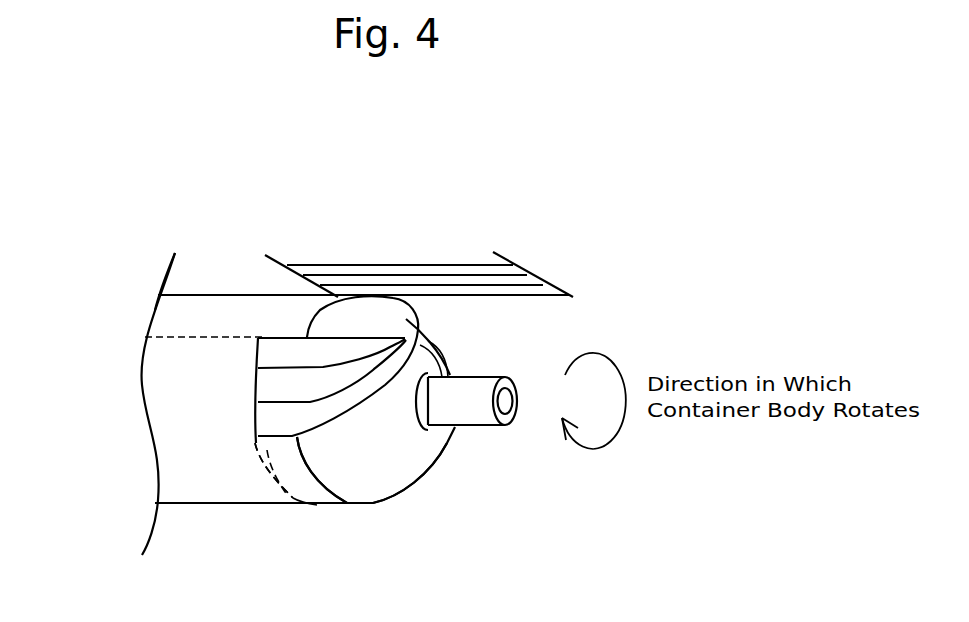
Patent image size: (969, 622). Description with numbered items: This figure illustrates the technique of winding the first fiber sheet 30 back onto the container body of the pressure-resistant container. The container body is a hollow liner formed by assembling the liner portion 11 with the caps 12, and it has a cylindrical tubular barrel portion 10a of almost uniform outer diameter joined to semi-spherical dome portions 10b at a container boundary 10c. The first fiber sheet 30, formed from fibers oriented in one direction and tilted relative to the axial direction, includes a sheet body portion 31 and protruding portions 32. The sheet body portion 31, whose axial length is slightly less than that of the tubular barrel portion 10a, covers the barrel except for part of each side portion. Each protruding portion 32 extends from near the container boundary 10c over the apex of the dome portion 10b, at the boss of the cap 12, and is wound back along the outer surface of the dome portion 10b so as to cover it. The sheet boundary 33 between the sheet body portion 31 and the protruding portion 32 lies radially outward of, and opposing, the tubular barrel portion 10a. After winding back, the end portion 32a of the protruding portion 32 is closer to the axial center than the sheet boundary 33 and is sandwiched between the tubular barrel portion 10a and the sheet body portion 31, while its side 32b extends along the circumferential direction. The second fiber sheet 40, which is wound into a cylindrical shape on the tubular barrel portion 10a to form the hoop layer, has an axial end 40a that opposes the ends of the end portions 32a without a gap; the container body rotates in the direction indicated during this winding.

The liner portion 11 is at (360, 487).
The tubular barrel portion 10a is at (175, 317).
The dome portion 10b is at (400, 470).
The container boundary 10c is at (317, 485).
The cap 12 is at (470, 415).
The first fiber sheet 30 is at (300, 292).
The sheet body portion 31 is at (232, 273).
The protruding portion 32 is at (385, 267).
The end portion 32a is at (267, 418).
The side 32b is at (260, 350).
The sheet boundary 33 is at (300, 280).
The second fiber sheet 40 is at (222, 470).
The end of the second fiber sheet 40a is at (293, 498).